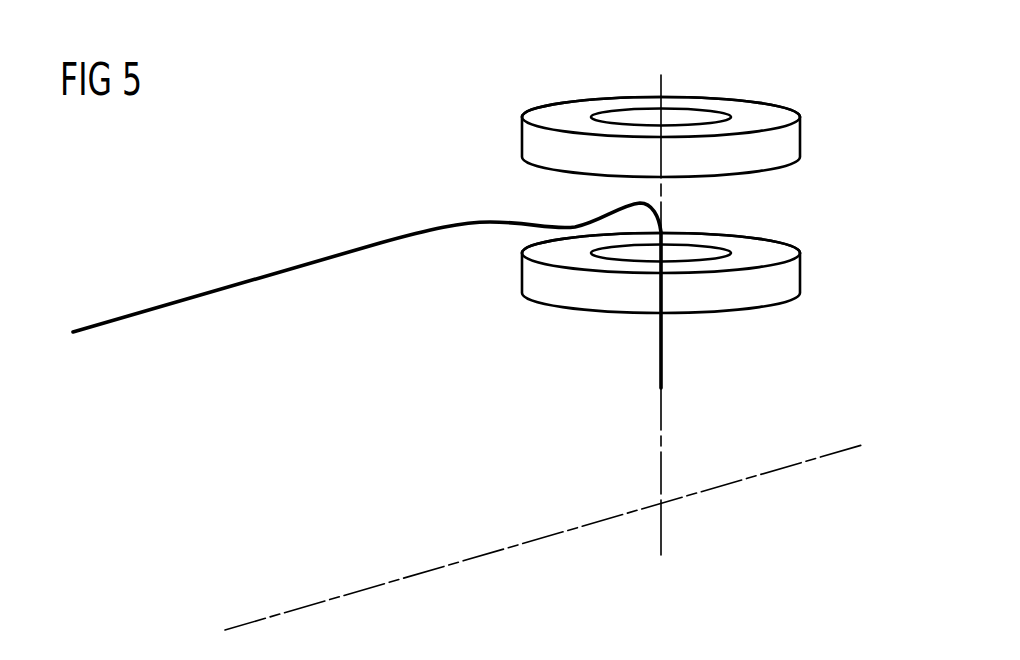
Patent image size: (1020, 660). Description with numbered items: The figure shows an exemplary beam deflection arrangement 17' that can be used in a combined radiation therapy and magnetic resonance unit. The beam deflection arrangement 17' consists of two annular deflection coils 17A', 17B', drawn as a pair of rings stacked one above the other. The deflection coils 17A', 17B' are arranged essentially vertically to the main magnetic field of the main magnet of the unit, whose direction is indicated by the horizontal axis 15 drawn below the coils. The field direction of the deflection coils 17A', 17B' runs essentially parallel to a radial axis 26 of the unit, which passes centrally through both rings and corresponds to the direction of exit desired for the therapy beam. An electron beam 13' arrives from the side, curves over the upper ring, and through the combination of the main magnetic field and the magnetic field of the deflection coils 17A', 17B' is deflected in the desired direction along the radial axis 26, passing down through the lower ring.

The electron beam 13' is at (367, 293).
The horizontal axis 15 is at (815, 458).
The beam deflection arrangement 17' is at (621, 166).
The annular deflection coil 17A' is at (703, 137).
The annular deflection coil 17B' is at (703, 273).
The radial axis 26 is at (659, 430).